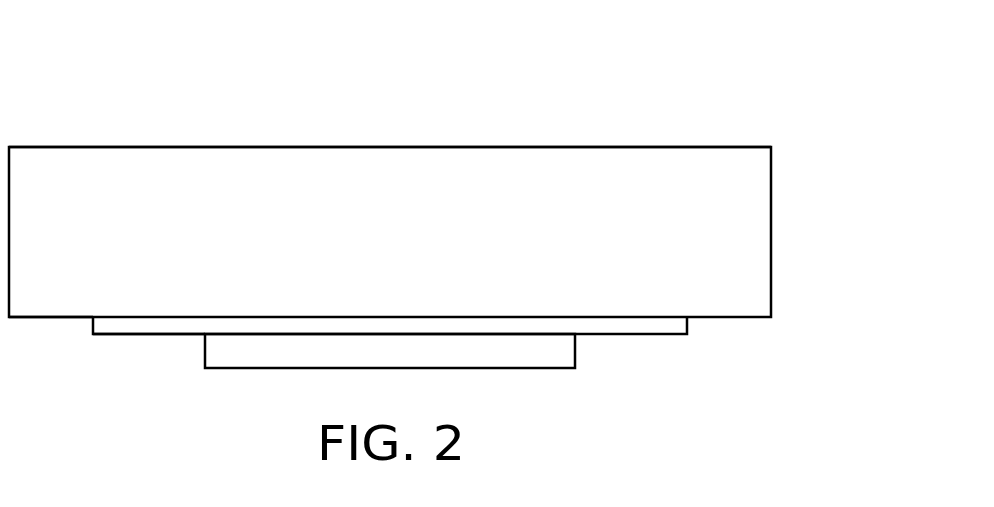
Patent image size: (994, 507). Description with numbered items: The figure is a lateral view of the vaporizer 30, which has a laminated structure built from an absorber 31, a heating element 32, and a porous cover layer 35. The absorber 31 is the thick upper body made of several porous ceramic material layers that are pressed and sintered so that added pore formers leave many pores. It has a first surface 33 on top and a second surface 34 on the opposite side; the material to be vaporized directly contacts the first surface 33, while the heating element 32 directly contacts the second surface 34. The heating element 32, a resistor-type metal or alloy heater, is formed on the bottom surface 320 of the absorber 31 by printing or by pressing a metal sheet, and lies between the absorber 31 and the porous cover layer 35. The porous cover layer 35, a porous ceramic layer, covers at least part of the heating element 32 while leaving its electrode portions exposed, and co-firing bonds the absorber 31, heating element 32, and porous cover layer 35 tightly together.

The vaporizer 30 is at (765, 44).
The absorber 31 is at (758, 215).
The heating element 32 is at (675, 326).
The first surface 33 is at (334, 147).
The second surface 34 is at (78, 318).
The porous cover layer 35 is at (562, 350).
The bottom surface 320 is at (142, 335).